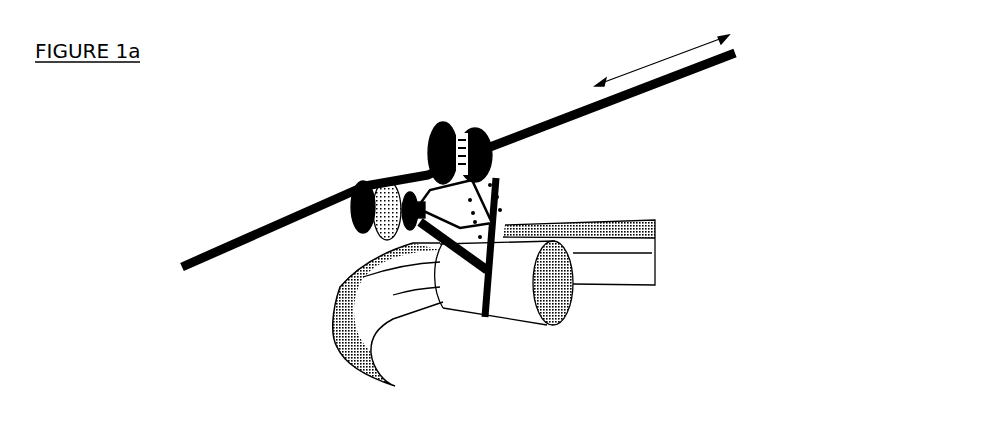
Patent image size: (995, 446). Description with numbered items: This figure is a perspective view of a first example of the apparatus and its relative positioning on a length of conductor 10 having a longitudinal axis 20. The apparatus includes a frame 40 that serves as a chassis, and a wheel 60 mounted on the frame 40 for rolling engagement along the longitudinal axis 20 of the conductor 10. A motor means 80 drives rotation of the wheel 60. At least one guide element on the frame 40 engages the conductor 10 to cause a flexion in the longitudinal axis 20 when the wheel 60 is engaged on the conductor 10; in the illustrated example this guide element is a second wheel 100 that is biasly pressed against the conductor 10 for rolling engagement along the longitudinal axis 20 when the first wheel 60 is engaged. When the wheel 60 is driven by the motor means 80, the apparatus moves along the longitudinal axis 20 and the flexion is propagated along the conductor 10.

The conductor 10 is at (458, 160).
The longitudinal axis 20 is at (662, 60).
The frame 40 is at (459, 209).
The wheel 60 is at (460, 143).
The motor means 80 is at (545, 282).
The second wheel 100 is at (373, 214).